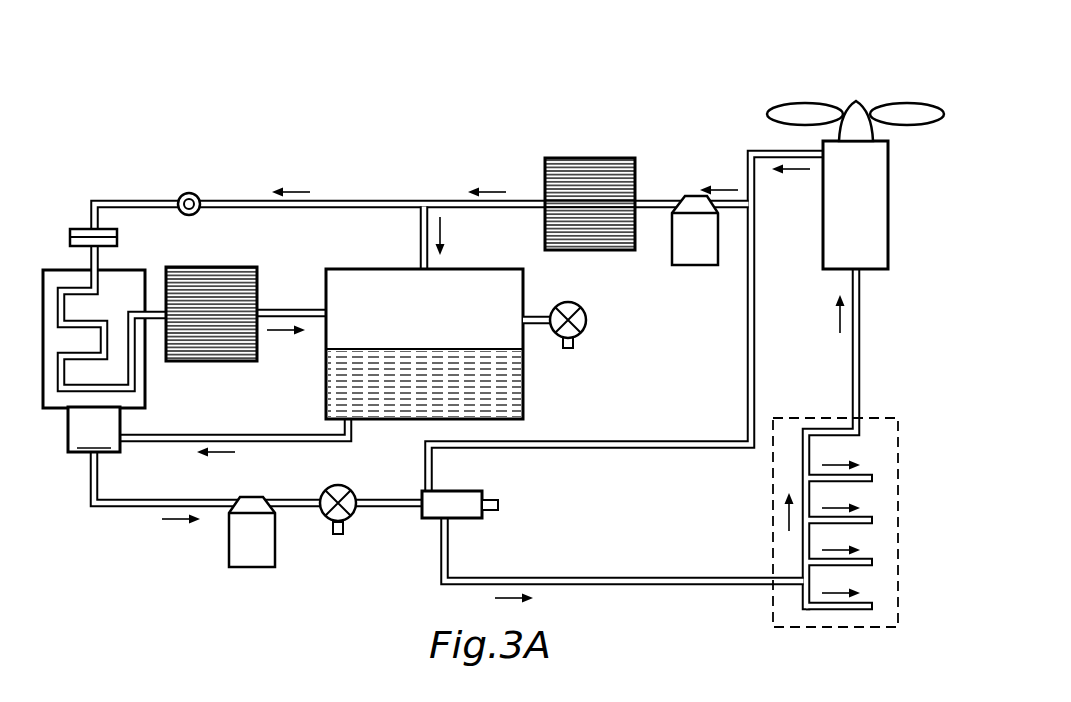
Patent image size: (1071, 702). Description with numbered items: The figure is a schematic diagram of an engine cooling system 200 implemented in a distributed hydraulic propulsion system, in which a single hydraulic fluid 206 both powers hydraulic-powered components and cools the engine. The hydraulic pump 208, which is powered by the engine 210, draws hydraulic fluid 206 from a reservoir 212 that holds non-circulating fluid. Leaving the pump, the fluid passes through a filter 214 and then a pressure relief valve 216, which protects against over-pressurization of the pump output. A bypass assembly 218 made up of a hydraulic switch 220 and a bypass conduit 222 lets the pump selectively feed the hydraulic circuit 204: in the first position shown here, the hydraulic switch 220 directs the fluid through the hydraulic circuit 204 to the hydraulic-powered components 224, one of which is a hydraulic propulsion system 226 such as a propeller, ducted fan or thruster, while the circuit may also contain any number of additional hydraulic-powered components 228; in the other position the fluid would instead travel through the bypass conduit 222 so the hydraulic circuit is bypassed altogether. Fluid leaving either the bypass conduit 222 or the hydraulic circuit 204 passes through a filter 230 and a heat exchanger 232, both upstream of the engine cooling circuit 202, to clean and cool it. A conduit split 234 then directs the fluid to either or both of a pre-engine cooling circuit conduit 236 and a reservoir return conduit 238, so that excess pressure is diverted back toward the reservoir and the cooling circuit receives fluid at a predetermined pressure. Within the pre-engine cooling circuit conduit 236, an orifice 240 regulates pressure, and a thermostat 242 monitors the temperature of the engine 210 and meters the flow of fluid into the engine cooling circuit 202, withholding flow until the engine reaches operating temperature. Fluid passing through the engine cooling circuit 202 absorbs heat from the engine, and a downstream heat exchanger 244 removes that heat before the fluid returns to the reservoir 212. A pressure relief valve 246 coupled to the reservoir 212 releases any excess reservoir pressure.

The engine cooling system 200 is at (340, 116).
The engine cooling circuit 202 is at (60, 290).
The hydraulic circuit 204 is at (864, 378).
The hydraulic fluid 206 is at (412, 348).
The hydraulic pump 208 is at (94, 429).
The engine 210 is at (146, 385).
The reservoir 212 is at (476, 268).
The filter 214 is at (252, 568).
The pressure relief valve 216 is at (342, 487).
The bypass assembly 218 is at (470, 471).
The hydraulic switch 220 is at (462, 520).
The bypass conduit 222 is at (746, 393).
The hydraulic-powered components 224 is at (880, 210).
The hydraulic propulsion system 226 is at (858, 99).
The additional hydraulic-powered components 228 is at (833, 628).
The filter 230 is at (703, 266).
The heat exchanger 232 is at (589, 158).
The conduit split 234 is at (420, 198).
The pre-engine cooling circuit conduit 236 is at (360, 200).
The reservoir return conduit 238 is at (420, 241).
The orifice 240 is at (190, 193).
The thermostat 242 is at (79, 229).
The heat exchanger 244 is at (227, 267).
The pressure relief valve 246 is at (586, 320).